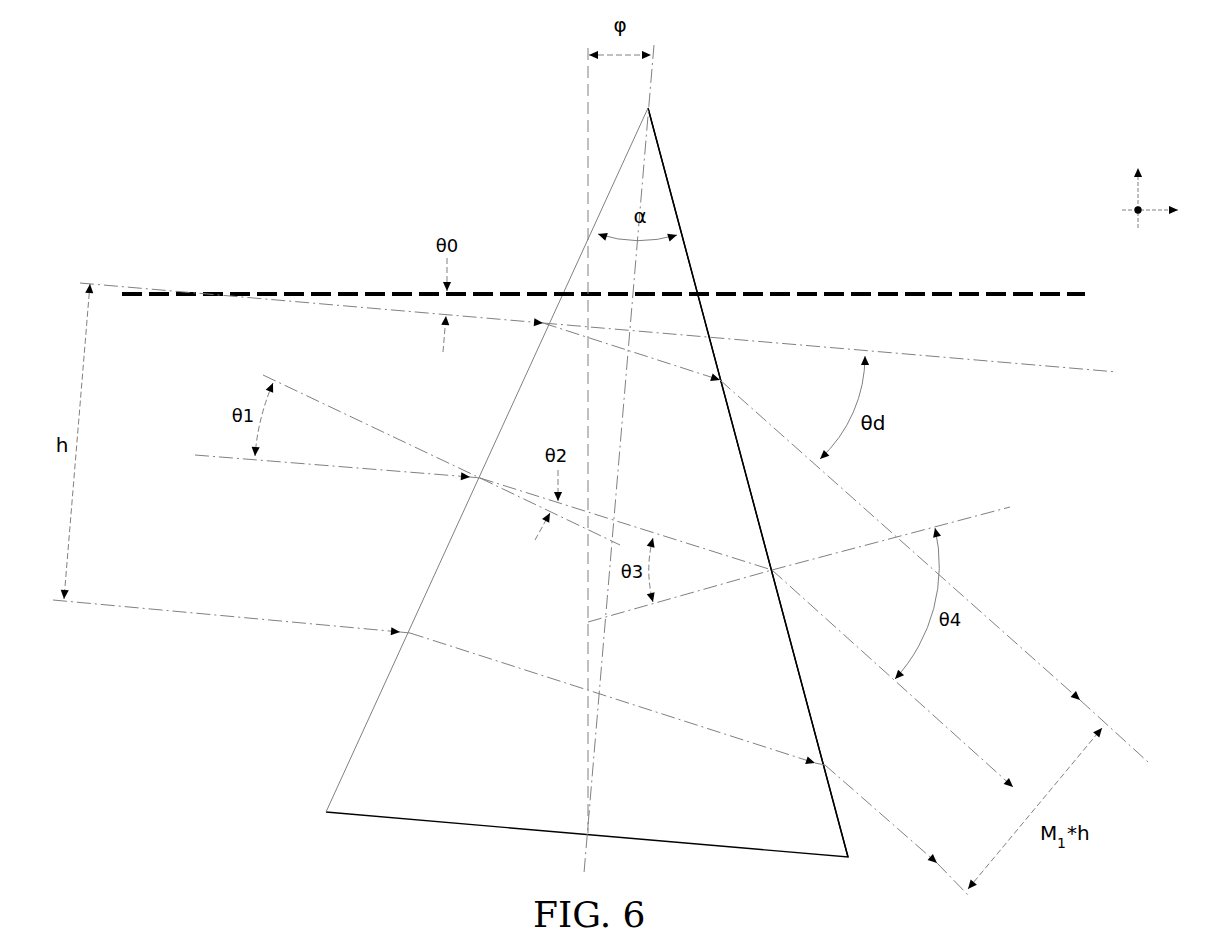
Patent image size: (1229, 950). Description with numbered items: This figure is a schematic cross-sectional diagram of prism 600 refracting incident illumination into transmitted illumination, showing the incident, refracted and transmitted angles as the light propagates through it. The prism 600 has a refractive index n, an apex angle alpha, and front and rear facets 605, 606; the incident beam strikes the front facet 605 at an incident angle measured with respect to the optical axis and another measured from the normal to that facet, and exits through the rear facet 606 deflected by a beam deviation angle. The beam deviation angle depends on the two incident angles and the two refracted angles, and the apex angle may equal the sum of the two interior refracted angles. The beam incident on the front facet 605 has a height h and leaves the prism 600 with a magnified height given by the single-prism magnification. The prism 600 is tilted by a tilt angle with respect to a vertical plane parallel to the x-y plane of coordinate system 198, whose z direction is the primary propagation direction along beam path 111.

The beam path 111 is at (345, 292).
The coordinate system 198 is at (1134, 196).
The prism 600 is at (492, 766).
The front facet 605 is at (361, 721).
The rear facet 606 is at (683, 189).